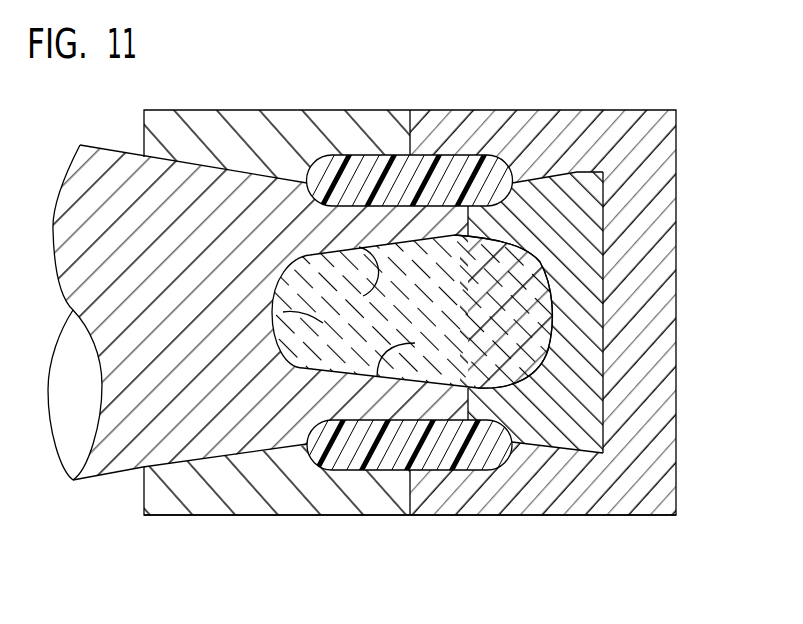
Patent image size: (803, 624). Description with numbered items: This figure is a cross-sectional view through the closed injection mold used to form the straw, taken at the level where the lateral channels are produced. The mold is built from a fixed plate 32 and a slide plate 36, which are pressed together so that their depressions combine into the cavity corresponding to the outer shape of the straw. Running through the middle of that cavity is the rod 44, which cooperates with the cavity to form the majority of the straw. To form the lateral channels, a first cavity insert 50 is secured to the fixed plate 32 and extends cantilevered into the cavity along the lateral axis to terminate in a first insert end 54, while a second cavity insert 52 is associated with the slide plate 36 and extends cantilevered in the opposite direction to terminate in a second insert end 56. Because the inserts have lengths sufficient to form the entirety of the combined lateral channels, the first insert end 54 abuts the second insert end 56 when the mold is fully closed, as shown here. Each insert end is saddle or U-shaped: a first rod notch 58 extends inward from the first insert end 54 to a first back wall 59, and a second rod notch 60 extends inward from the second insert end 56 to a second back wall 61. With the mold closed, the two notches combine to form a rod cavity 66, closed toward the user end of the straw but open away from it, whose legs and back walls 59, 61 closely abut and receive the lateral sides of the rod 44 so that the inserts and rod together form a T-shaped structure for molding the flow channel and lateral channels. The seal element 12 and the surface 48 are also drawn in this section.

The seal 12 is at (475, 450).
The fixed plate 32 is at (648, 173).
The slide plate 36 is at (280, 493).
The rod 44 is at (452, 298).
The lower surface of plunger 48 is at (510, 363).
The first cavity insert 50 is at (575, 343).
The second cavity insert 52 is at (198, 330).
The first insert end 54 is at (467, 213).
The second insert end 56 is at (470, 227).
The first rod notch 58 is at (533, 257).
The first back wall 59 is at (547, 308).
The second rod notch 60 is at (358, 281).
The second back wall 61 is at (317, 329).
The rod cavity 66 is at (410, 349).